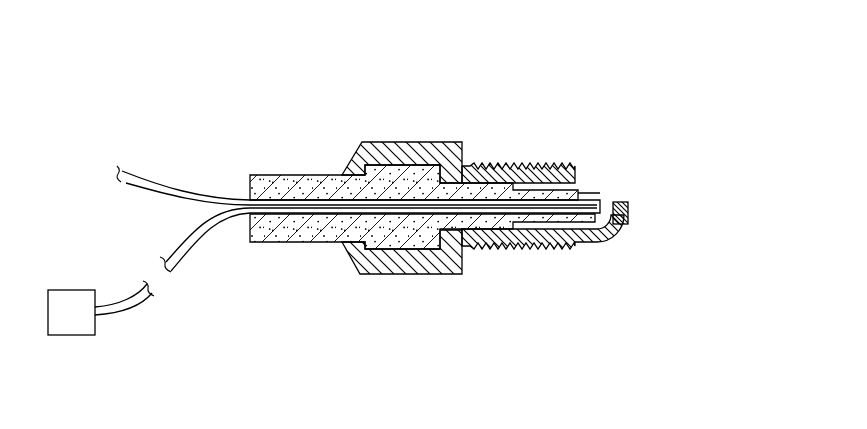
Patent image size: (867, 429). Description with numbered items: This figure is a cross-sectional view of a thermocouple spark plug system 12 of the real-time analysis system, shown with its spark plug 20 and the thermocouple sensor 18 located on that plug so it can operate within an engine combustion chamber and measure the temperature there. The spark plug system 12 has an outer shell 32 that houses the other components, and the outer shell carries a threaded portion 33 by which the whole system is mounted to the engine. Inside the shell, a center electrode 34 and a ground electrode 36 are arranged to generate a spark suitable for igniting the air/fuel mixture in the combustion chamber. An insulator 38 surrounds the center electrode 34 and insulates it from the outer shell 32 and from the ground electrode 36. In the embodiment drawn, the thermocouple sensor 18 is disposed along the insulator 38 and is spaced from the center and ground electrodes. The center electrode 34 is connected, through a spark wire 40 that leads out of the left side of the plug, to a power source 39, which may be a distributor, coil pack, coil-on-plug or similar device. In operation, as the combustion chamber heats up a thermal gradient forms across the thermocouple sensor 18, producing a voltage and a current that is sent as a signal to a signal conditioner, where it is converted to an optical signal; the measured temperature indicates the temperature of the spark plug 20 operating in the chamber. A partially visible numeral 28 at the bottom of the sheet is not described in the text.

The thermocouple spark plug system 12 is at (571, 106).
The thermocouple sensor 18 is at (590, 199).
The spark plug 20 is at (442, 290).
The sensor 28 is at (566, 424).
The outer shell 32 is at (440, 142).
The threaded portion 33 is at (513, 164).
The center electrode 34 is at (628, 213).
The ground electrode 36 is at (628, 222).
The insulator 38 is at (383, 233).
The power source 39 is at (73, 318).
The spark wire 40 is at (125, 312).